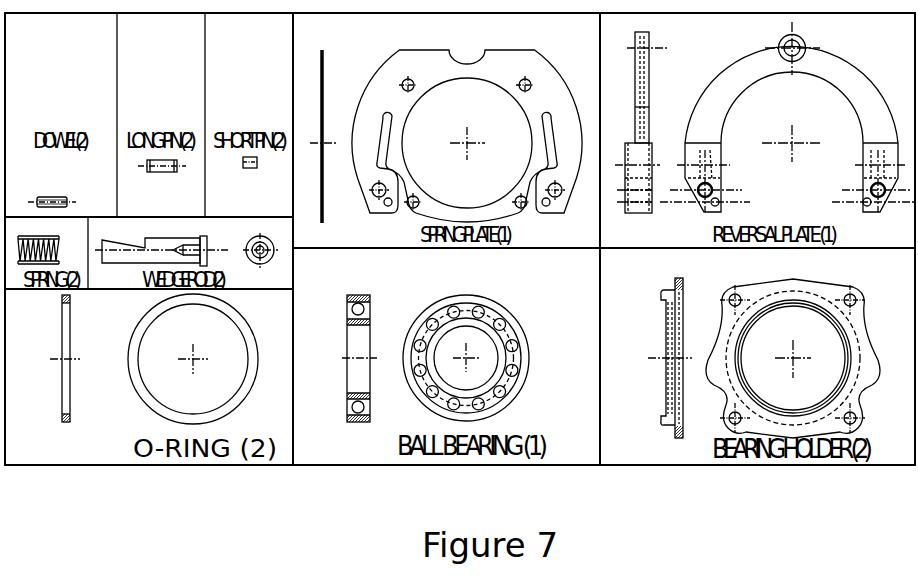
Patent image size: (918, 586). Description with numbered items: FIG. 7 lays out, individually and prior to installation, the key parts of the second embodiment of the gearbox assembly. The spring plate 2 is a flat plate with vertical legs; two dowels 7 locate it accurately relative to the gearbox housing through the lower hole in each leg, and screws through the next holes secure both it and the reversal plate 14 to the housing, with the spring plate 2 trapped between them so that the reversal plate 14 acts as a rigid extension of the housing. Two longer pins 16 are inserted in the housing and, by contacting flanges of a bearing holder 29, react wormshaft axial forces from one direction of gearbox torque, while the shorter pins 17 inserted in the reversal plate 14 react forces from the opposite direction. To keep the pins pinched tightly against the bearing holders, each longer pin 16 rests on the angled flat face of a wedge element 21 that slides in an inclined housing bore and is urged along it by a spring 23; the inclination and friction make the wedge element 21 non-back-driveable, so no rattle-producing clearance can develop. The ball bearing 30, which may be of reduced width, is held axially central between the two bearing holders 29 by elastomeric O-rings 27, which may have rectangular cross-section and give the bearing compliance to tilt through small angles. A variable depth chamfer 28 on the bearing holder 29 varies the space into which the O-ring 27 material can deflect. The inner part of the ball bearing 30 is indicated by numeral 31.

The spring plate 2 is at (550, 47).
The dowel 7 is at (75, 186).
The reversal plate 14 is at (885, 54).
The longer pin 16 is at (176, 185).
The shorter pin 17 is at (259, 181).
The wedge element 21 is at (230, 247).
The spring 23 is at (73, 246).
The O-ring 27 is at (132, 415).
The variable depth chamfer 28 is at (738, 335).
The bearing holder 29 is at (781, 345).
The ball bearing 30 is at (469, 338).
The ball bearing inner ring 31 is at (534, 324).